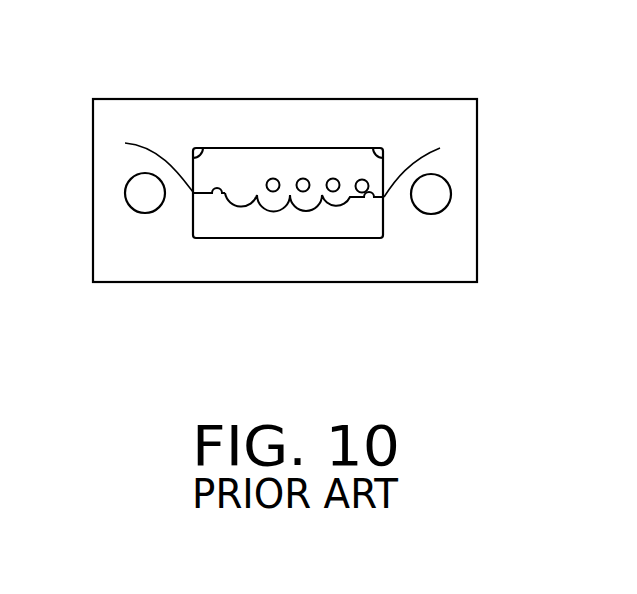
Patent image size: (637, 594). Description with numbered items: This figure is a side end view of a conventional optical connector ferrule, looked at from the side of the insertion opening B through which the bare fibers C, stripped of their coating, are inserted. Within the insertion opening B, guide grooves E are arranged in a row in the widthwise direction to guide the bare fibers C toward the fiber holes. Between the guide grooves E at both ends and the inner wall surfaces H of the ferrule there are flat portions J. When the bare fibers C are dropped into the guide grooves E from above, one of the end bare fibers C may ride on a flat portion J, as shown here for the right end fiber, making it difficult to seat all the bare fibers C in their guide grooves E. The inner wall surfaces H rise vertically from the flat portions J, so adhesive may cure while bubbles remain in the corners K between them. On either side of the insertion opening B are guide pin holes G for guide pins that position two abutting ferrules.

The insertion opening B is at (235, 163).
The inner wall surfaces H is at (202, 156).
The bare fibers C is at (273, 178).
The guide grooves E is at (242, 203).
The flat portions J is at (217, 199).
The guide pin holes G is at (135, 193).
The corners K is at (125, 143).